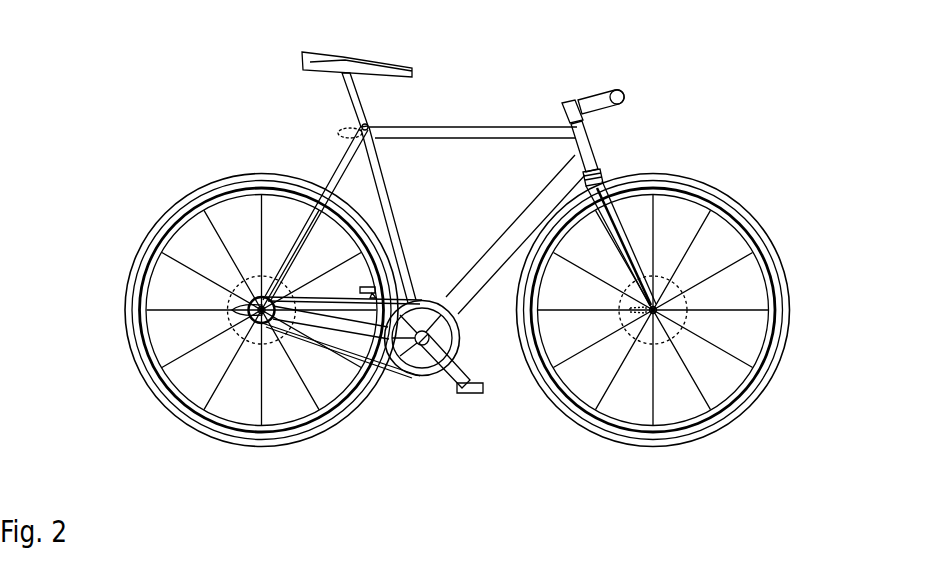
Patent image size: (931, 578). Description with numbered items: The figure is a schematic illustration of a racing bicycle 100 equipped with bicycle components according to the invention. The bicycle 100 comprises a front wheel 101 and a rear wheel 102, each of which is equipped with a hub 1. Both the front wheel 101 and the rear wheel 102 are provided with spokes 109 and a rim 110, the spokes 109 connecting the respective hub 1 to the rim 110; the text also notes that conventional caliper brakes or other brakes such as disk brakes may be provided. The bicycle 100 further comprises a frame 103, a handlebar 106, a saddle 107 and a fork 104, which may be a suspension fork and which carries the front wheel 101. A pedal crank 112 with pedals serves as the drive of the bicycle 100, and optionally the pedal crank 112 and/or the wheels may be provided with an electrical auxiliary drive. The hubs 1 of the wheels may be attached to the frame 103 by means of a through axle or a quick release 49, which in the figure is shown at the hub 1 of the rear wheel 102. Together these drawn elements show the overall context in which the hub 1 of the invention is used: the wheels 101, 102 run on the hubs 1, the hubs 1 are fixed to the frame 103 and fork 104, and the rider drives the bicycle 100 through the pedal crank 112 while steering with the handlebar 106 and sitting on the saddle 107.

The racing bicycle 100 is at (170, 92).
The front wheel 101 is at (757, 222).
The rear wheel 102 is at (165, 235).
The frame 103 is at (477, 127).
The fork 104 is at (612, 219).
The handlebar 106 is at (596, 92).
The saddle 107 is at (339, 63).
The spokes 109 is at (752, 312).
The rim 110 is at (765, 350).
The pedal crank 112 is at (438, 282).
The quick release 49 is at (236, 312).
The hub 1 is at (276, 352).